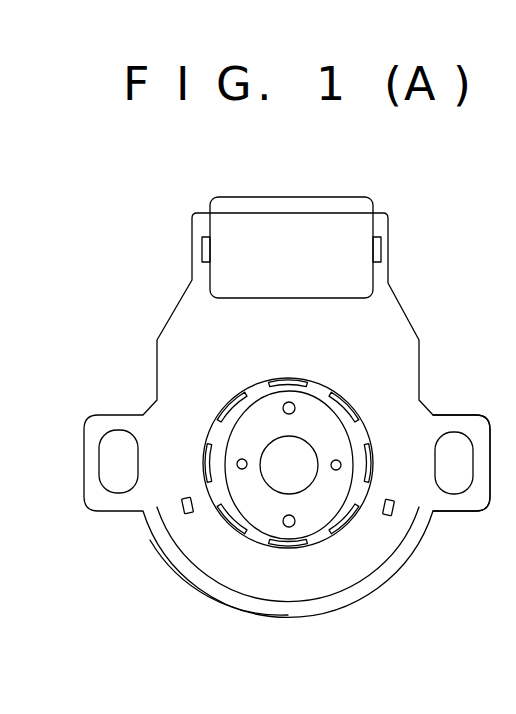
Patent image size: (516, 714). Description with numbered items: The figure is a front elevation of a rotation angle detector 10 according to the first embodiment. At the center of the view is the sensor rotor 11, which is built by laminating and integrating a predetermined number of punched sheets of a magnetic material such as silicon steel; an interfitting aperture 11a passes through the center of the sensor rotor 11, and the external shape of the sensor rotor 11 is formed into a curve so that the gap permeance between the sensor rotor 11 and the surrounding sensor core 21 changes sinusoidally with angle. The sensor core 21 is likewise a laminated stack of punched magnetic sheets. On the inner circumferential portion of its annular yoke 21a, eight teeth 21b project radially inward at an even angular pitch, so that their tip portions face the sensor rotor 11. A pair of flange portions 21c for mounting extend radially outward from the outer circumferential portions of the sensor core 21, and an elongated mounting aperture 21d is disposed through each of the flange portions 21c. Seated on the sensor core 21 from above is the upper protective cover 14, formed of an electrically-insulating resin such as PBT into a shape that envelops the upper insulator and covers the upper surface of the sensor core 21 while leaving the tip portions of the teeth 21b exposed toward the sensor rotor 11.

The rotation angle detector 10 is at (109, 211).
The sensor rotor 11 is at (327, 425).
The interfitting aperture 11a is at (270, 450).
The upper protective cover 14 is at (380, 317).
The sensor core 21 is at (142, 513).
The annular yoke 21a is at (177, 563).
The teeth 21b is at (343, 530).
The flange portions 21c is at (461, 417).
The elongated mounting apertures 21d is at (456, 493).